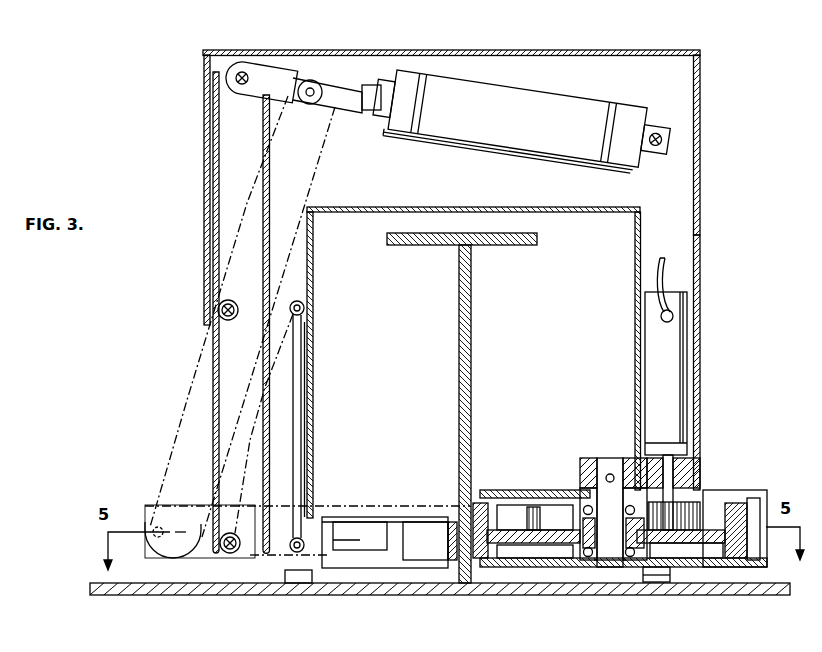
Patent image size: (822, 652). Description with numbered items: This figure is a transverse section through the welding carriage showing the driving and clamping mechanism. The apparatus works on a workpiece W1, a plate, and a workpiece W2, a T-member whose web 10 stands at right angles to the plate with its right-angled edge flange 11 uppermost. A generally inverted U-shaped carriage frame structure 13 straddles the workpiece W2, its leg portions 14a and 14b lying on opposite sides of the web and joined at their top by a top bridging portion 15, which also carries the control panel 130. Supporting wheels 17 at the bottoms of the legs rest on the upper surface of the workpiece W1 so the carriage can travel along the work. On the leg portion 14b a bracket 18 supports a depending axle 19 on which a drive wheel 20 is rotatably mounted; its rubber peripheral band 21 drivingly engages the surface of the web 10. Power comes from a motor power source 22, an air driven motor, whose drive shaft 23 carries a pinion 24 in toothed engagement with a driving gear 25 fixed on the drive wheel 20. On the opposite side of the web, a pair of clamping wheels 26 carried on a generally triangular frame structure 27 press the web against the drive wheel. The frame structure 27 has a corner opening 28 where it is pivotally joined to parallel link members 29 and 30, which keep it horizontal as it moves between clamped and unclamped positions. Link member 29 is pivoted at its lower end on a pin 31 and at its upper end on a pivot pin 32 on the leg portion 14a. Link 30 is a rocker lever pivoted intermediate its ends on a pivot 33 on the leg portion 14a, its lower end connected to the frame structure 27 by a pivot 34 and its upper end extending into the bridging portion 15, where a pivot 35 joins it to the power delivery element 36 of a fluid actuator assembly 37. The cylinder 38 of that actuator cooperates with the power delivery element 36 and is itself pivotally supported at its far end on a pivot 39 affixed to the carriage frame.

The web 10 is at (473, 318).
The right-angled edge flange 11 is at (522, 246).
The carriage frame structure 13 is at (701, 101).
The control panel 130 is at (586, 50).
The leg portion 14a is at (317, 462).
The leg portion 14b is at (704, 392).
The top bridging portion 15 is at (600, 213).
The supporting wheels 17 is at (658, 576).
The bracket 18 is at (586, 458).
The axle 19 is at (610, 548).
The drive wheel 20 is at (540, 548).
The peripheral band 21 is at (741, 548).
The motor power source 22 is at (683, 352).
The drive shaft 23 is at (668, 468).
The pinion 24 is at (700, 501).
The driving gear 25 is at (534, 512).
The clamping wheels 26 is at (425, 546).
The frame structure 27 is at (396, 518).
The corner opening 28 is at (306, 443).
The link member 29 is at (304, 408).
The link 30 is at (212, 385).
The pin 31 is at (301, 551).
The pivot pin 32 is at (305, 305).
The pivot 33 is at (220, 308).
The pivot 34 is at (226, 553).
The pivot 35 is at (236, 79).
The power delivery element 36 is at (352, 98).
The fluid actuator assembly 37 is at (512, 121).
The cylinder 38 is at (556, 122).
The pivot 39 is at (656, 140).
The workpiece W1 is at (498, 592).
The workpiece W2 is at (456, 343).